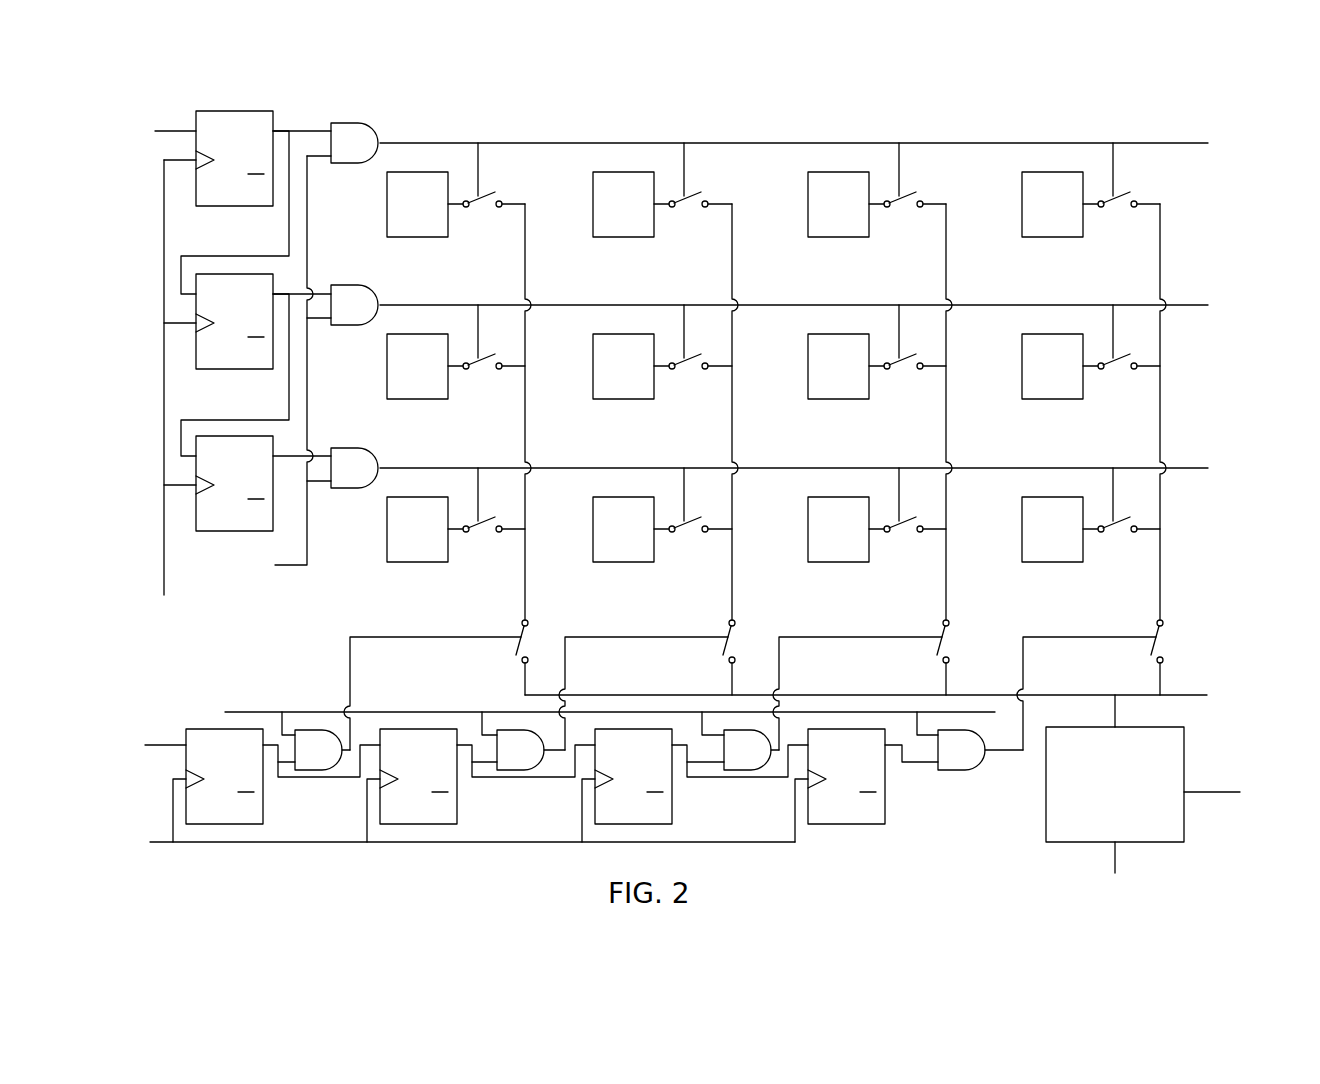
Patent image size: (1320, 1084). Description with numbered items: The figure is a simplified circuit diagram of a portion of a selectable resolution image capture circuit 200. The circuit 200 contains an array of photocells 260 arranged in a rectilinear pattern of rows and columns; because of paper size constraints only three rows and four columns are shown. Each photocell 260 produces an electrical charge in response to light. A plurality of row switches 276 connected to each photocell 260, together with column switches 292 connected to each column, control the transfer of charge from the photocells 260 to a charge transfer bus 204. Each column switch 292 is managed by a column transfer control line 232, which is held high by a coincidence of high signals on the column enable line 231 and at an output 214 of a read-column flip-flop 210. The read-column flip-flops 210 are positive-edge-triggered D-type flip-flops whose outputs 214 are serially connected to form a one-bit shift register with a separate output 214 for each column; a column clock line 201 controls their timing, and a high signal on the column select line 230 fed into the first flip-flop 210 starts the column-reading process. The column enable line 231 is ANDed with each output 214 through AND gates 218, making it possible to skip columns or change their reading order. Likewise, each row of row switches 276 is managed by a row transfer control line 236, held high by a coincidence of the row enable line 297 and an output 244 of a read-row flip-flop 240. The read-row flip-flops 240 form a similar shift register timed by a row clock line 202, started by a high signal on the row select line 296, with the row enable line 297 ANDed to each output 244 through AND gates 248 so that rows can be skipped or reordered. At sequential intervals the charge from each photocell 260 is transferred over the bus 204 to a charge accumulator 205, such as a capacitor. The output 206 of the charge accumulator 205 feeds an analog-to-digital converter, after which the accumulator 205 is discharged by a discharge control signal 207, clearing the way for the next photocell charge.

The selectable resolution image capture circuit 200 is at (854, 101).
The column clock line 201 is at (283, 841).
The row clock line 202 is at (167, 565).
The charge transfer bus 204 is at (1062, 694).
The charge accumulator 205 is at (1045, 777).
The output of the charge accumulator 206 is at (1199, 791).
The discharge control signal 207 is at (1118, 857).
The read-column flip-flop 210 is at (535, 776).
The output of read-column flip-flop 214 is at (327, 779).
The AND gate 218 is at (659, 750).
The column select line 230 is at (152, 741).
The column enable line 231 is at (262, 711).
The column transfer control line 232 is at (368, 636).
The row transfer control line 236 is at (541, 142).
The read-row flip-flop 240 is at (234, 321).
The output of read-row flip-flop 244 is at (208, 256).
The AND gate 248 is at (325, 305).
The photocell 260 is at (418, 238).
The row switch 276 is at (478, 215).
The column switch 292 is at (540, 631).
The row select line 296 is at (173, 131).
The row enable line 297 is at (297, 567).